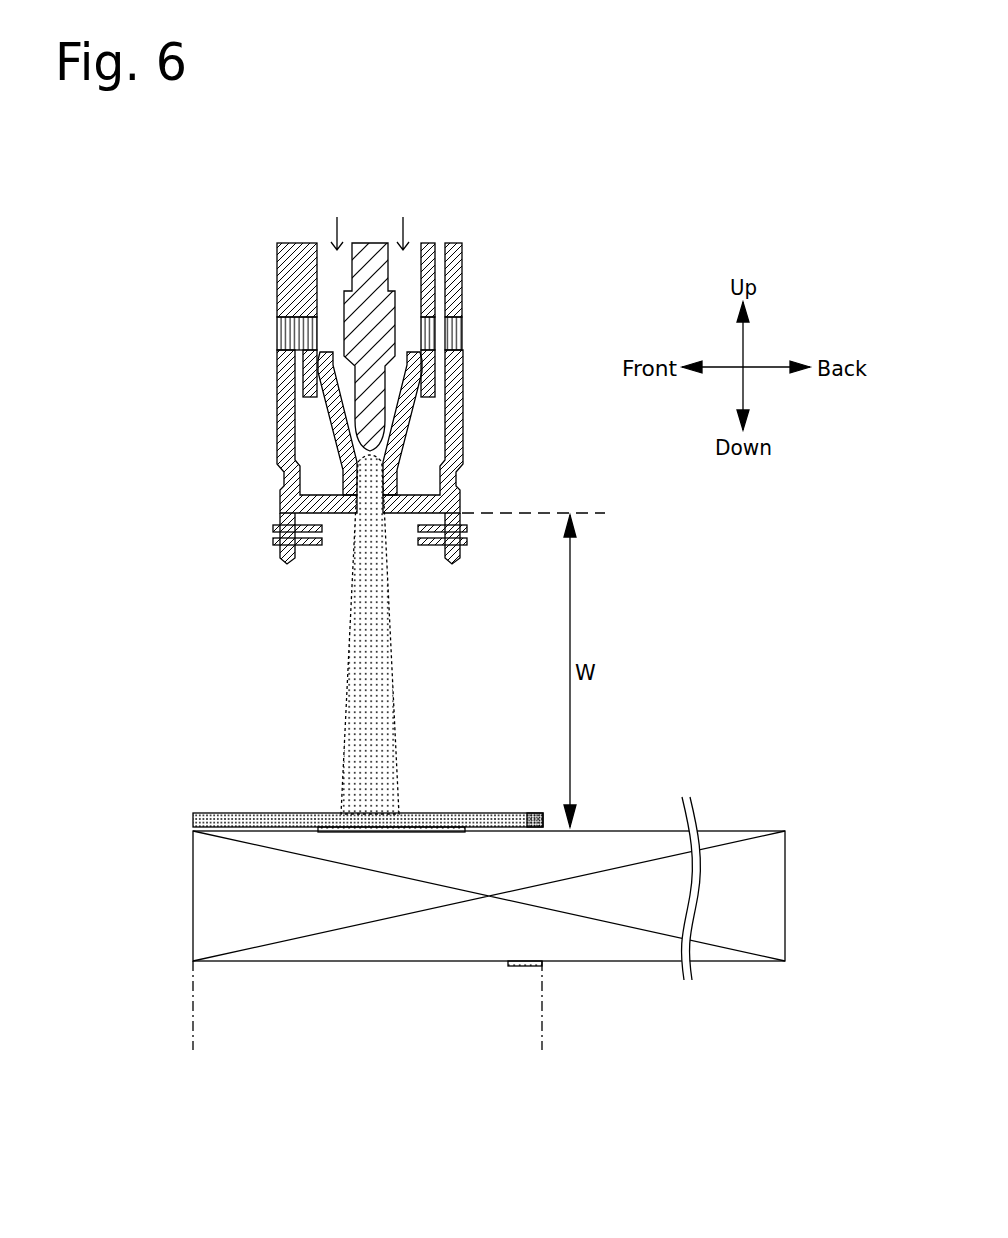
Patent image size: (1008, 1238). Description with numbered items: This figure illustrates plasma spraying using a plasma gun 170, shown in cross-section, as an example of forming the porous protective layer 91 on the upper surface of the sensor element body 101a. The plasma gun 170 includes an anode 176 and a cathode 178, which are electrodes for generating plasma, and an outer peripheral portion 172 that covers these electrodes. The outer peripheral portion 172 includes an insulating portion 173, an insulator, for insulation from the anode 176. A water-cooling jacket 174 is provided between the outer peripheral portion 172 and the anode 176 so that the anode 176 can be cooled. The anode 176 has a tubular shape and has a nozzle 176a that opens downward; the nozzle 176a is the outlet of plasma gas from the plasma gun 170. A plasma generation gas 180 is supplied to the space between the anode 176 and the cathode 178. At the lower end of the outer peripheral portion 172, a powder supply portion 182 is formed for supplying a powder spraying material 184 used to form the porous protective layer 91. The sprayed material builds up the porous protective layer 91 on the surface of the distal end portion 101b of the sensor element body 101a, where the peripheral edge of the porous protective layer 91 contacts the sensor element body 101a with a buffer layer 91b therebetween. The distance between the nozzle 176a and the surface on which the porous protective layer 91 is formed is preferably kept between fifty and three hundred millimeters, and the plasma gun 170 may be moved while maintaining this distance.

The plasma gun 170 is at (528, 209).
The outer peripheral portion 172 is at (277, 268).
The insulating portion 173 is at (298, 338).
The water-cooling jacket 174 is at (427, 440).
The anode 176 is at (395, 453).
The nozzle 176a is at (383, 518).
The cathode 178 is at (370, 417).
The plasma generation gas 180 is at (372, 221).
The powder supply portion 182 is at (280, 545).
The powder spraying material 184 is at (333, 540).
The porous protective layer 91 is at (306, 814).
The buffer layer 91b is at (526, 814).
The sensor element body 101a is at (650, 772).
The distal end portion 101b is at (542, 1037).